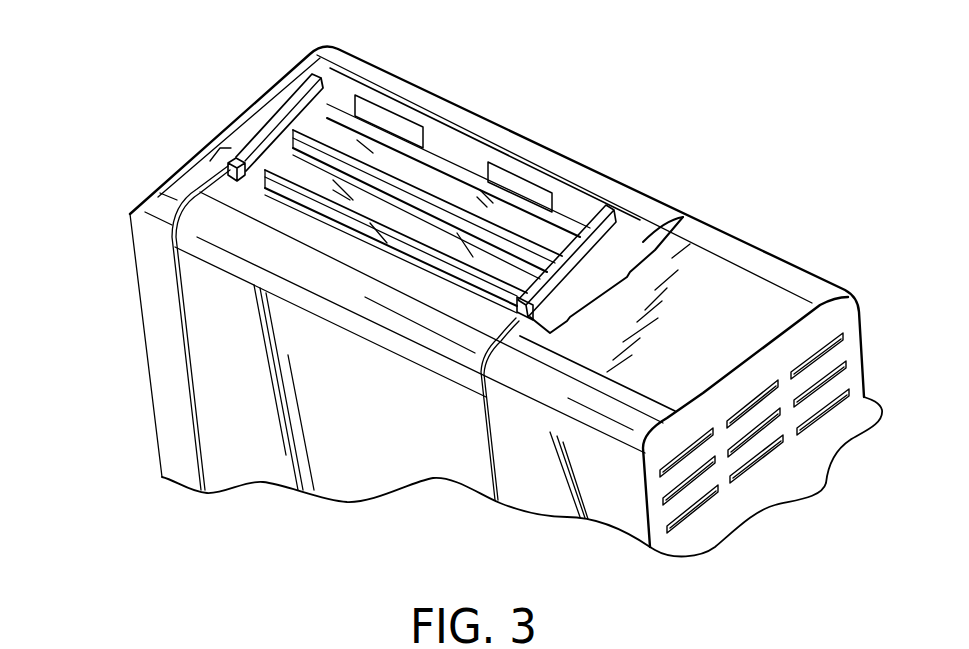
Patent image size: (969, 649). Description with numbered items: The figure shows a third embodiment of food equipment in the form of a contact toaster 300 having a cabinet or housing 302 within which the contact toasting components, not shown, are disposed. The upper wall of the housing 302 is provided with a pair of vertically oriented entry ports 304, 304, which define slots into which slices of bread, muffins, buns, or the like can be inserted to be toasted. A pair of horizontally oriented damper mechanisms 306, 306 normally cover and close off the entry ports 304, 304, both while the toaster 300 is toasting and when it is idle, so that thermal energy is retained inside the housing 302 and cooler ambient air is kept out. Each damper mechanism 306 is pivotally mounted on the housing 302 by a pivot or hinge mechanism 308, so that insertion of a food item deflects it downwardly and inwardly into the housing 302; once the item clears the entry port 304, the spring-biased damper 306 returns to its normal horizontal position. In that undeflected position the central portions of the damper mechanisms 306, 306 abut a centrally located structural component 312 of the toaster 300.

The contact toaster 300 is at (688, 145).
The cabinet or housing 302 is at (362, 463).
The entry port 304 is at (290, 155).
The damper mechanism 306 is at (453, 187).
The pivot or hinge mechanism 308 is at (393, 147).
The centrally located structural component 312 is at (522, 240).